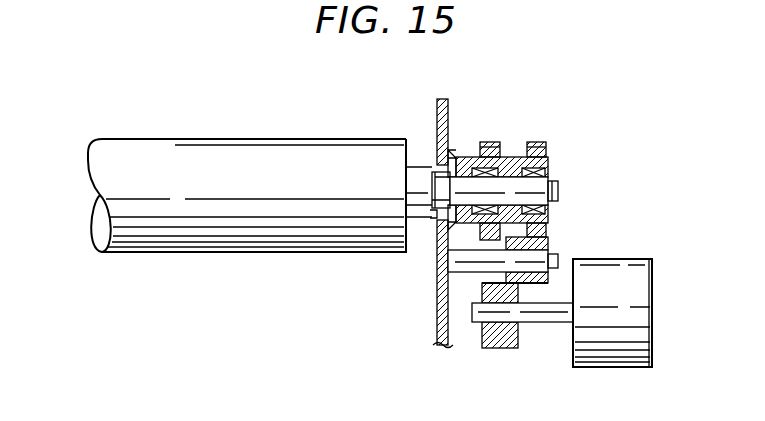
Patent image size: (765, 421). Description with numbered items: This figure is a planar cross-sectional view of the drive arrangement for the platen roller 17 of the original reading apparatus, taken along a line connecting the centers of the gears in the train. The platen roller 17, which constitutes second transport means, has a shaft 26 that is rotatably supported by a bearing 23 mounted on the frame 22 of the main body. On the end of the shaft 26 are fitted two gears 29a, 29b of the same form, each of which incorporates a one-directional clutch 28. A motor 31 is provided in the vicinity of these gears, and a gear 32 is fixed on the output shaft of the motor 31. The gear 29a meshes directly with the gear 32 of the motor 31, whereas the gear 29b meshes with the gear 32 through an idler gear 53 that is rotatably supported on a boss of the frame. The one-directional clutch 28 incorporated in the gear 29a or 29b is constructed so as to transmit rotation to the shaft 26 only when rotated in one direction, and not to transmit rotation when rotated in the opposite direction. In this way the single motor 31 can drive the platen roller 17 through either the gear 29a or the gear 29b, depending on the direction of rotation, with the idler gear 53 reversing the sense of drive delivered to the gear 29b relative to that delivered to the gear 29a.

The platen roller 17 is at (317, 158).
The shaft 26 is at (418, 183).
The frame 22 is at (443, 98).
The bearing 23 is at (455, 160).
The one-directional clutch 28 is at (497, 165).
The gear 29a is at (487, 152).
The gear 29b is at (537, 150).
The idler gear 53 is at (545, 245).
The gear 32 is at (487, 330).
The motor 31 is at (625, 268).